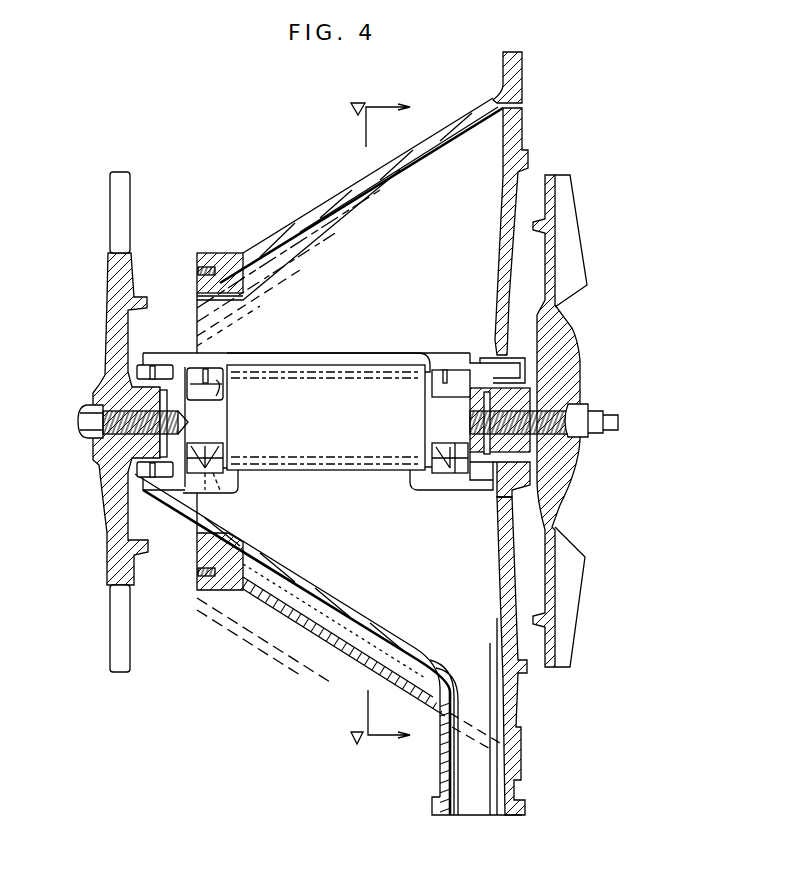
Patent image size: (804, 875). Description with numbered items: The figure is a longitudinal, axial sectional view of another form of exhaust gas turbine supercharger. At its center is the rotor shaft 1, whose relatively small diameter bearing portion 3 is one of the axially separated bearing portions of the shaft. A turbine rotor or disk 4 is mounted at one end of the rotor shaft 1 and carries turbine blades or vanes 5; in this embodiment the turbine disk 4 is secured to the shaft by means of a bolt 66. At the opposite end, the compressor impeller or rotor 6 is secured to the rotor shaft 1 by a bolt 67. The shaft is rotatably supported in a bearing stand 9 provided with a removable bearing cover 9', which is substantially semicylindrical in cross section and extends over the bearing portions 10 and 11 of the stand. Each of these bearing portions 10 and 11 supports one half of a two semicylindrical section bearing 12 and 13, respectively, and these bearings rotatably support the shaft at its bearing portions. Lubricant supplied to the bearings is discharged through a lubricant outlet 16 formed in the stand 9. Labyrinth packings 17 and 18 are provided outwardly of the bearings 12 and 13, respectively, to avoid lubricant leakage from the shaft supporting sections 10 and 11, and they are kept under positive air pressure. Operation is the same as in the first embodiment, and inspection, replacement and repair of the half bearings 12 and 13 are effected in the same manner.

The rotor shaft 1 is at (386, 368).
The bearing portion 3 is at (443, 377).
The turbine rotor or disk 4 is at (105, 507).
The turbine blades or vanes 5 is at (110, 633).
The compressor rotor 6 is at (568, 472).
The bearing stand 9 is at (344, 433).
The bearing cover 9' is at (328, 345).
The bearing portion 10 is at (212, 484).
The bearing portion 11 is at (447, 467).
The bearing 12 is at (215, 372).
The bearing 13 is at (458, 463).
The lubricant outlet 16 is at (478, 800).
The labyrinth packing 17 is at (135, 379).
The labyrinth packing 18 is at (502, 386).
The bolt 66 is at (103, 447).
The bolt 67 is at (573, 398).